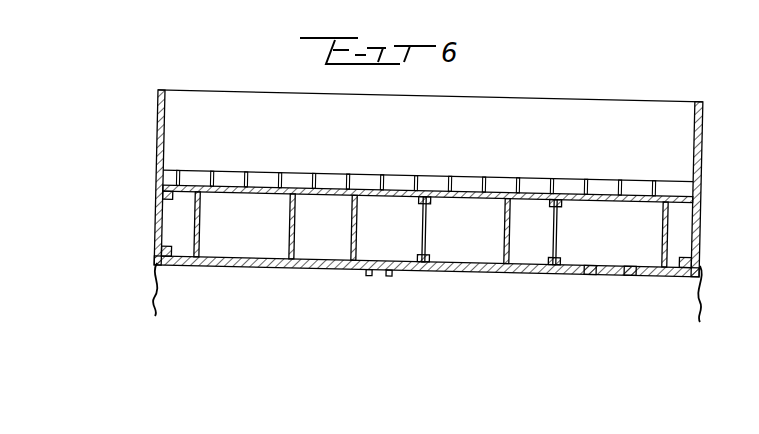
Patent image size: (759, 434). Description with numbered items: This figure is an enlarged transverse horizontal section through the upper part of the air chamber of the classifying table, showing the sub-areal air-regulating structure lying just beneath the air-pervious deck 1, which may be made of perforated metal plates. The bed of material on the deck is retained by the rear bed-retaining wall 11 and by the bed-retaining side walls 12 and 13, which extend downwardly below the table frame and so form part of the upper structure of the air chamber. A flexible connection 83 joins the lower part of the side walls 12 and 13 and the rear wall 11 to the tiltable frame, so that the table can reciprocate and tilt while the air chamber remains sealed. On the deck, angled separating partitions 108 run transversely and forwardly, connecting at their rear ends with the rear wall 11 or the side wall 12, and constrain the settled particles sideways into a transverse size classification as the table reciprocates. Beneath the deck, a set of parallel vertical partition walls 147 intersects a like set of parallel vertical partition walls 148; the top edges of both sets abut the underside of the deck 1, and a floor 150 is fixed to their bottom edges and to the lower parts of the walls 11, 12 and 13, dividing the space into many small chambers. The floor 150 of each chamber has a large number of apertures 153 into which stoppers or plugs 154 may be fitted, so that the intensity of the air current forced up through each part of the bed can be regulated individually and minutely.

The air-pervious deck 1 is at (470, 186).
The rear bed-retaining wall 11 is at (576, 95).
The bed-retaining side wall 12 is at (157, 128).
The bed-retaining side wall 13 is at (704, 133).
The flexible connection 83 is at (150, 290).
The separating partitions 108 is at (345, 185).
The partition walls 147 is at (428, 216).
The partition walls 148 is at (358, 218).
The floor 150 is at (471, 278).
The apertures 153 is at (638, 281).
The stoppers or plugs 154 is at (393, 280).